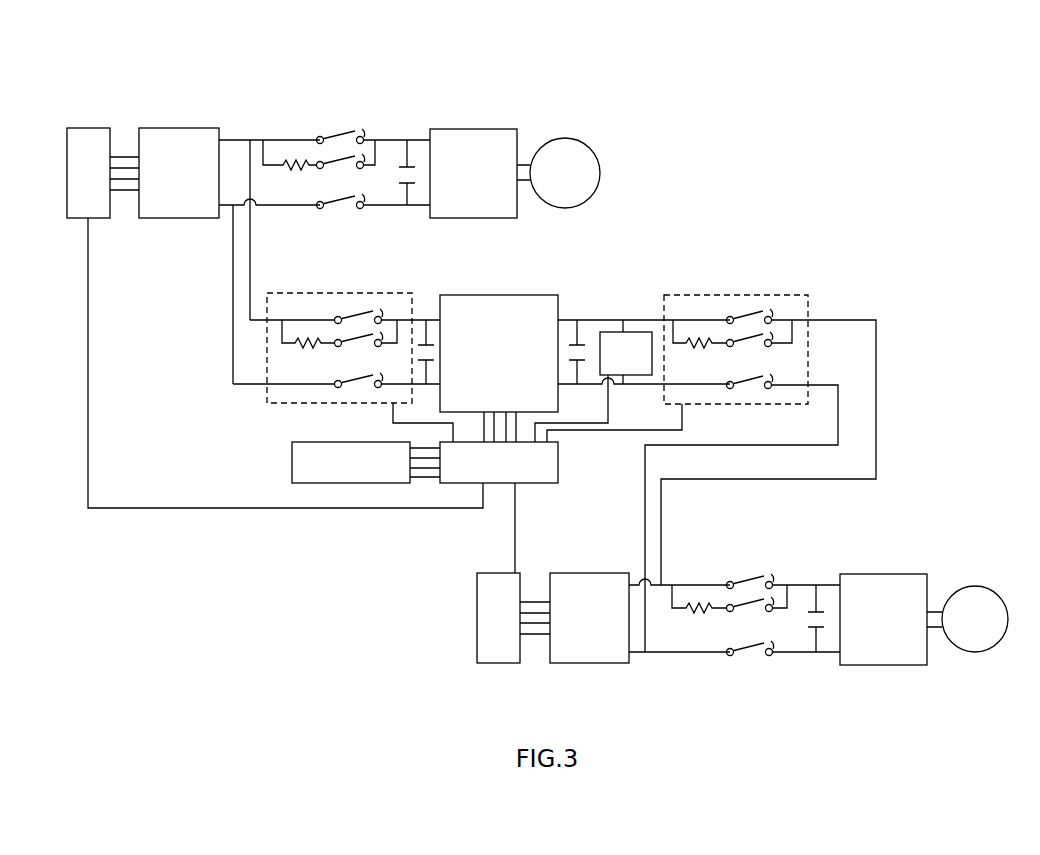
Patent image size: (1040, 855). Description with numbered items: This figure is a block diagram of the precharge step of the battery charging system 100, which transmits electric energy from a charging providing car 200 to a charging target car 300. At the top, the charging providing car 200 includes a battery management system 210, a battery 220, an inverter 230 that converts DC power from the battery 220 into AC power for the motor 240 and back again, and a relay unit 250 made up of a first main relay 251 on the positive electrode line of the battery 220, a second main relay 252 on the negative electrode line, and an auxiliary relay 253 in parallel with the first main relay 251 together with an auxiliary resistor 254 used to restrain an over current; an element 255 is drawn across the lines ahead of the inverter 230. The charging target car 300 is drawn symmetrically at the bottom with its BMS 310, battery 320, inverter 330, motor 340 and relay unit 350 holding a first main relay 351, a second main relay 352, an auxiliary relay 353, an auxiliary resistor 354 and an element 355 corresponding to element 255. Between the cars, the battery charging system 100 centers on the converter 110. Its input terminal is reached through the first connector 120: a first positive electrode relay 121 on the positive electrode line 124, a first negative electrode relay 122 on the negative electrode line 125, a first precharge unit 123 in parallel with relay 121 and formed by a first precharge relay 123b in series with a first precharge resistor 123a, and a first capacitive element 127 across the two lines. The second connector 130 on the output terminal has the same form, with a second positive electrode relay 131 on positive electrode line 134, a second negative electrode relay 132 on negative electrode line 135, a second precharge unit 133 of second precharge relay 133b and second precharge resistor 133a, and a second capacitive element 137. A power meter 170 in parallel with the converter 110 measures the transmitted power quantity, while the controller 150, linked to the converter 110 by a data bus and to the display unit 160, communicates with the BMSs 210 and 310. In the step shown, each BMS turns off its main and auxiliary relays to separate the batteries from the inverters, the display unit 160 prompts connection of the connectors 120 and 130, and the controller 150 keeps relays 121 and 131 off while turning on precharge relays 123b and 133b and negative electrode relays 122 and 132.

The battery charging system 100 is at (845, 232).
The converter 110 is at (528, 295).
The first connector 120 is at (277, 293).
The first positive electrode relay 121 is at (364, 310).
The first negative electrode relay 122 is at (363, 392).
The first precharge unit 123 is at (256, 350).
The first precharge resistor 123a is at (300, 344).
The first precharge relay 123b is at (350, 342).
The positive electrode line 124 is at (250, 318).
The negative electrode line 125 is at (233, 390).
The first capacitive element 127 is at (428, 340).
The second connector 130 is at (683, 295).
The second positive electrode relay 131 is at (740, 312).
The second negative electrode relay 132 is at (757, 392).
The second precharge unit 133 is at (824, 353).
The second precharge resistor 133a is at (712, 345).
The second precharge relay 133b is at (754, 344).
The positive electrode line 134 is at (850, 320).
The negative electrode line 135 is at (840, 396).
The second capacitive element 137 is at (577, 340).
The controller 150 is at (558, 462).
The display unit 160 is at (292, 462).
The power meter 170 is at (634, 332).
The charging providing car 200 is at (617, 95).
The battery management system 210 is at (89, 128).
The battery 220 is at (179, 128).
The inverter 230 is at (486, 129).
The motor 240 is at (565, 138).
The relay unit 250 is at (372, 105).
The first main relay 251 is at (350, 128).
The second main relay 252 is at (328, 210).
The auxiliary relay 253 is at (323, 133).
The auxiliary resistor 254 is at (285, 160).
The first relay capacitor 255 is at (407, 150).
The charging target car 300 is at (937, 548).
The BMS 310 is at (477, 620).
The battery 320 is at (590, 663).
The inverter 330 is at (887, 665).
The second motor 340 is at (973, 652).
The relay unit 350 is at (712, 656).
The first main relay 351 is at (757, 577).
The second main relay 352 is at (741, 657).
The auxiliary relay 353 is at (729, 582).
The second relay precharge resistor 354 is at (691, 604).
The second relay capacitor 355 is at (818, 583).